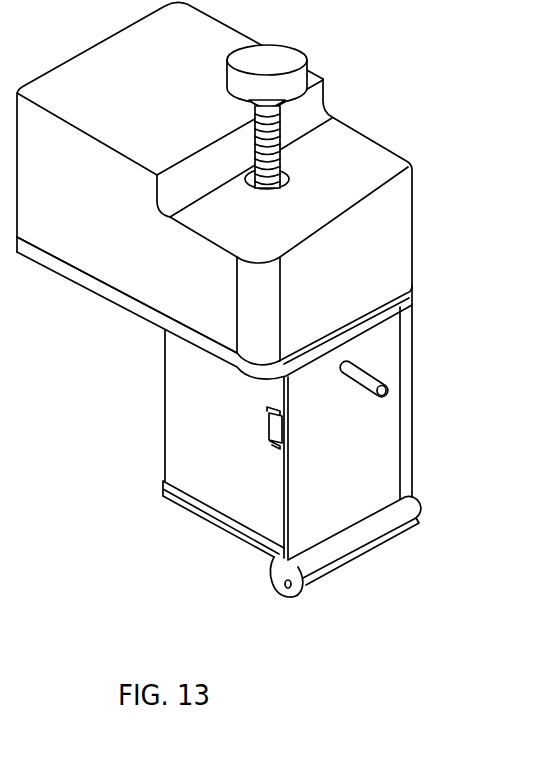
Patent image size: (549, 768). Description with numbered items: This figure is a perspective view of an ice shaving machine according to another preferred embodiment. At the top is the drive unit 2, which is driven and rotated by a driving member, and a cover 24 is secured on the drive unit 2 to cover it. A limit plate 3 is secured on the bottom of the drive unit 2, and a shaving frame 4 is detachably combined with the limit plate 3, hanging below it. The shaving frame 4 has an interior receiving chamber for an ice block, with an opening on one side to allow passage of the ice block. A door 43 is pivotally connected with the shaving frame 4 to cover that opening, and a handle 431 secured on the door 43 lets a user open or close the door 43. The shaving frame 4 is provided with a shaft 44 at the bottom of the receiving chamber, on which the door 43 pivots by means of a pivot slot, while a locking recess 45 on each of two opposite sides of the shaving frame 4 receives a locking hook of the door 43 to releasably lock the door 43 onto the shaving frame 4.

The drive unit 2 is at (125, 300).
The cover 24 is at (76, 257).
The limit plate 3 is at (388, 314).
The shaving frame 4 is at (175, 443).
The door 43 is at (390, 420).
The handle 431 is at (383, 391).
The shaft 44 is at (372, 546).
The locking recess 45 is at (267, 441).